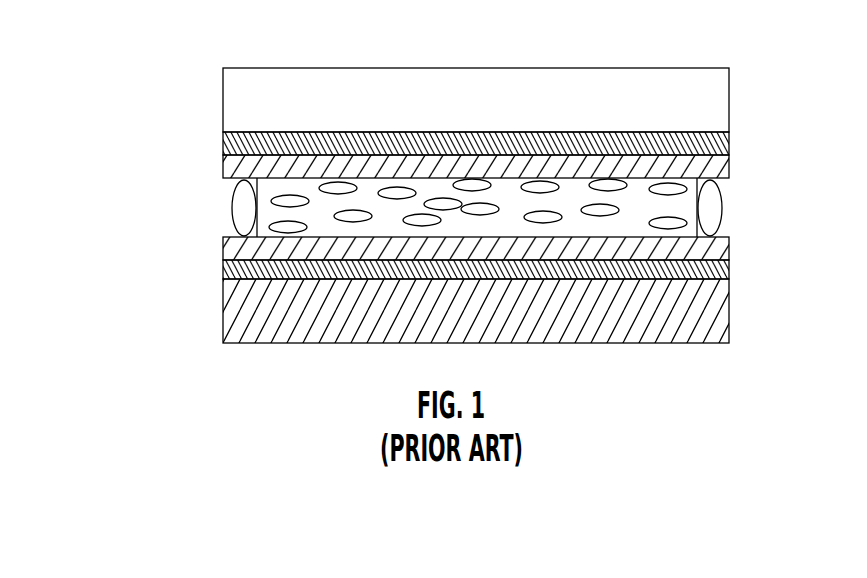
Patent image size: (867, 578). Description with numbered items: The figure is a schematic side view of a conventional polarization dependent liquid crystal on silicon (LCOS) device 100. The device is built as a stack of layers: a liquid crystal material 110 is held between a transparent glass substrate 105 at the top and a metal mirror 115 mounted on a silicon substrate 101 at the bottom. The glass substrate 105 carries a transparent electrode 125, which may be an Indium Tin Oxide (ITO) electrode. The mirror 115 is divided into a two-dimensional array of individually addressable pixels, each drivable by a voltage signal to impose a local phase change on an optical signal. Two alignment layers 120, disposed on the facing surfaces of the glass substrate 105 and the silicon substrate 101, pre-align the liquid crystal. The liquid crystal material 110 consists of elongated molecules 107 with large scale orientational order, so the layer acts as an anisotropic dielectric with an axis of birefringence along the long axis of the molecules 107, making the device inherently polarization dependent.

The LCOS device 100 is at (478, 43).
The glass substrate 105 is at (463, 129).
The transparent electrode 125 is at (221, 142).
The liquid crystal material 110 is at (457, 184).
The alignment layers 120 is at (220, 177).
The mirror 115 is at (220, 268).
The silicon substrate 101 is at (475, 331).
The elongated molecules 107 is at (617, 210).